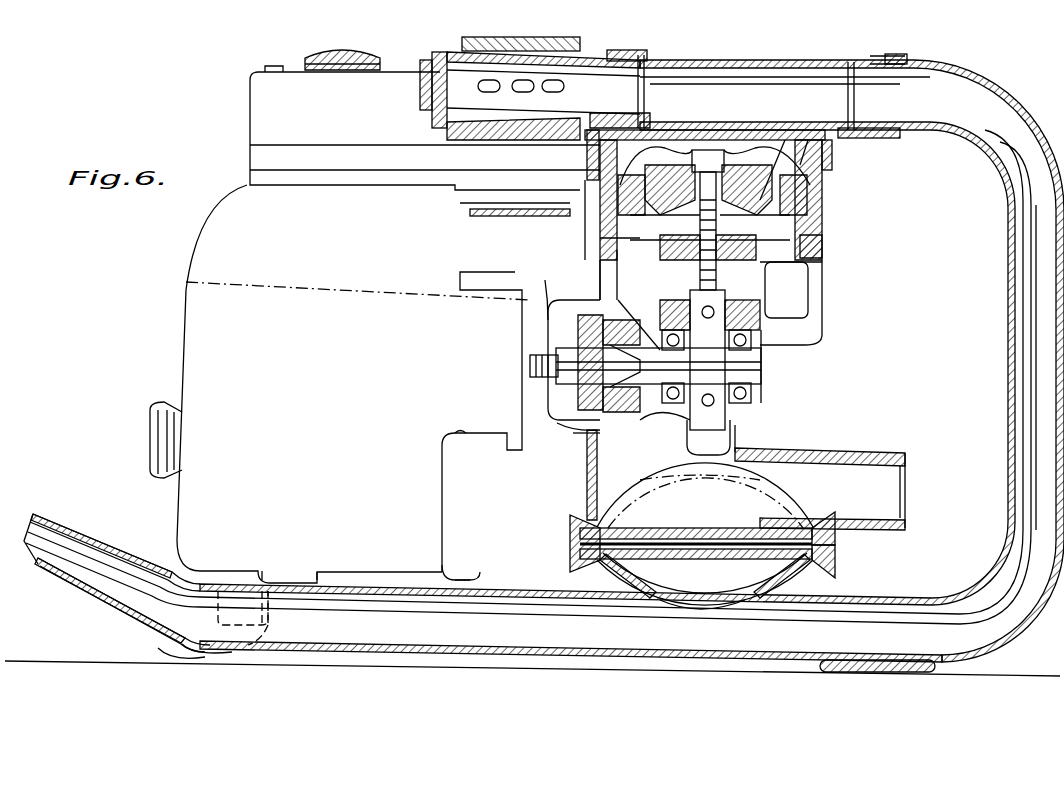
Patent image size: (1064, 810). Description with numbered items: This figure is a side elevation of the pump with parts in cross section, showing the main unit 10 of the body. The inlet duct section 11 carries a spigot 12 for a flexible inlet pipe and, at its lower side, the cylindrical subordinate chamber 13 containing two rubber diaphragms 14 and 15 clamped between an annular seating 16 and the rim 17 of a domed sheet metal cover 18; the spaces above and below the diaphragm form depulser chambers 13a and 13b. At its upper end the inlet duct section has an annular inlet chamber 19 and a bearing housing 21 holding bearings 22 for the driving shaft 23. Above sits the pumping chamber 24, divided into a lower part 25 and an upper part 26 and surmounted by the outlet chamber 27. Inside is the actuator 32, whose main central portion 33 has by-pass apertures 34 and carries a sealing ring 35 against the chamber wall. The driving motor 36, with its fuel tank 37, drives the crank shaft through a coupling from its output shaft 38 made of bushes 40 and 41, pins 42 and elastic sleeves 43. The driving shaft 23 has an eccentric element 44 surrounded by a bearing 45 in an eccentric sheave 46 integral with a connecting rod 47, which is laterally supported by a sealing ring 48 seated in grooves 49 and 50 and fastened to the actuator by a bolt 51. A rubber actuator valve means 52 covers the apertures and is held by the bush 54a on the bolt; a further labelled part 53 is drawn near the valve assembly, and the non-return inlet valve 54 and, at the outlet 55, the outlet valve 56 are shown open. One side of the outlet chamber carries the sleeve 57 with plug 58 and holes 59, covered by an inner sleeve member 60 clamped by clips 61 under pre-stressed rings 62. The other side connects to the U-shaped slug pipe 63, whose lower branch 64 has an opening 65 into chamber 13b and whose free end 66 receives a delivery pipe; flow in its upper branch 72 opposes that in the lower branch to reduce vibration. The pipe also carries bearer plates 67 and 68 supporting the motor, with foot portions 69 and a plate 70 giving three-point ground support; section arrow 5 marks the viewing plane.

The section line 5 is at (717, 52).
The main unit 10 is at (838, 323).
The inlet duct section 11 is at (753, 432).
The spigot 12 is at (834, 451).
The subordinate chamber 13 is at (572, 500).
The upper depulser chamber 13a is at (705, 501).
The lower depulser chamber 13b is at (705, 573).
The diaphragm 14 is at (765, 537).
The diaphragm 15 is at (768, 560).
The annular seating 16 is at (808, 530).
The rim 17 is at (826, 568).
The domed sheet metal cover 18 is at (612, 563).
The annular inlet chamber 19 is at (822, 294).
The bearing housing 21 is at (768, 328).
The bearings 22 is at (756, 348).
The driving shaft 23 is at (744, 371).
The pumping chamber 24 is at (845, 176).
The lower part 25 is at (824, 216).
The upper part 26 is at (830, 163).
The outlet chamber 27 is at (752, 78).
The actuator 32 is at (600, 239).
The main central portion 33 is at (727, 150).
The apertures 34 is at (620, 190).
The sealing ring 35 is at (825, 192).
The driving motor 36 is at (190, 253).
The fuel tank 37 is at (250, 104).
The output shaft 38 is at (547, 278).
The bush 40 is at (594, 308).
The bush 41 is at (630, 318).
The pins 42 is at (608, 318).
The sleeves 43 is at (604, 398).
The eccentric element 44 is at (716, 416).
The bearing 45 is at (714, 310).
The eccentric sheave 46 is at (700, 448).
The connecting rod 47 is at (702, 278).
The sealing ring 48 is at (812, 288).
The groove 49 is at (664, 298).
The groove 50 is at (612, 252).
The bolt 51 is at (707, 150).
The actuator valve means 52 is at (650, 165).
The gear 53 is at (826, 262).
The non-return inlet valve 54 is at (823, 241).
The bush 54a is at (722, 150).
The outlet 55 is at (783, 138).
The non-return outlet valve 56 is at (806, 140).
The sleeve 57 is at (432, 120).
The plug 58 is at (426, 80).
The holes 59 is at (487, 60).
The inner sleeve member 60 is at (545, 70).
The clips 61 is at (440, 122).
The rings 62 is at (490, 131).
The slug pipe 63 is at (988, 373).
The lower branch 64 is at (756, 659).
The opening 65 is at (703, 592).
The free end 66 is at (52, 597).
The bearer plate 67 is at (296, 574).
The bearer plate 68 is at (480, 582).
The foot portions 69 is at (156, 653).
The transversely extending plate 70 is at (960, 669).
The upper horizontal branch 72 is at (883, 68).